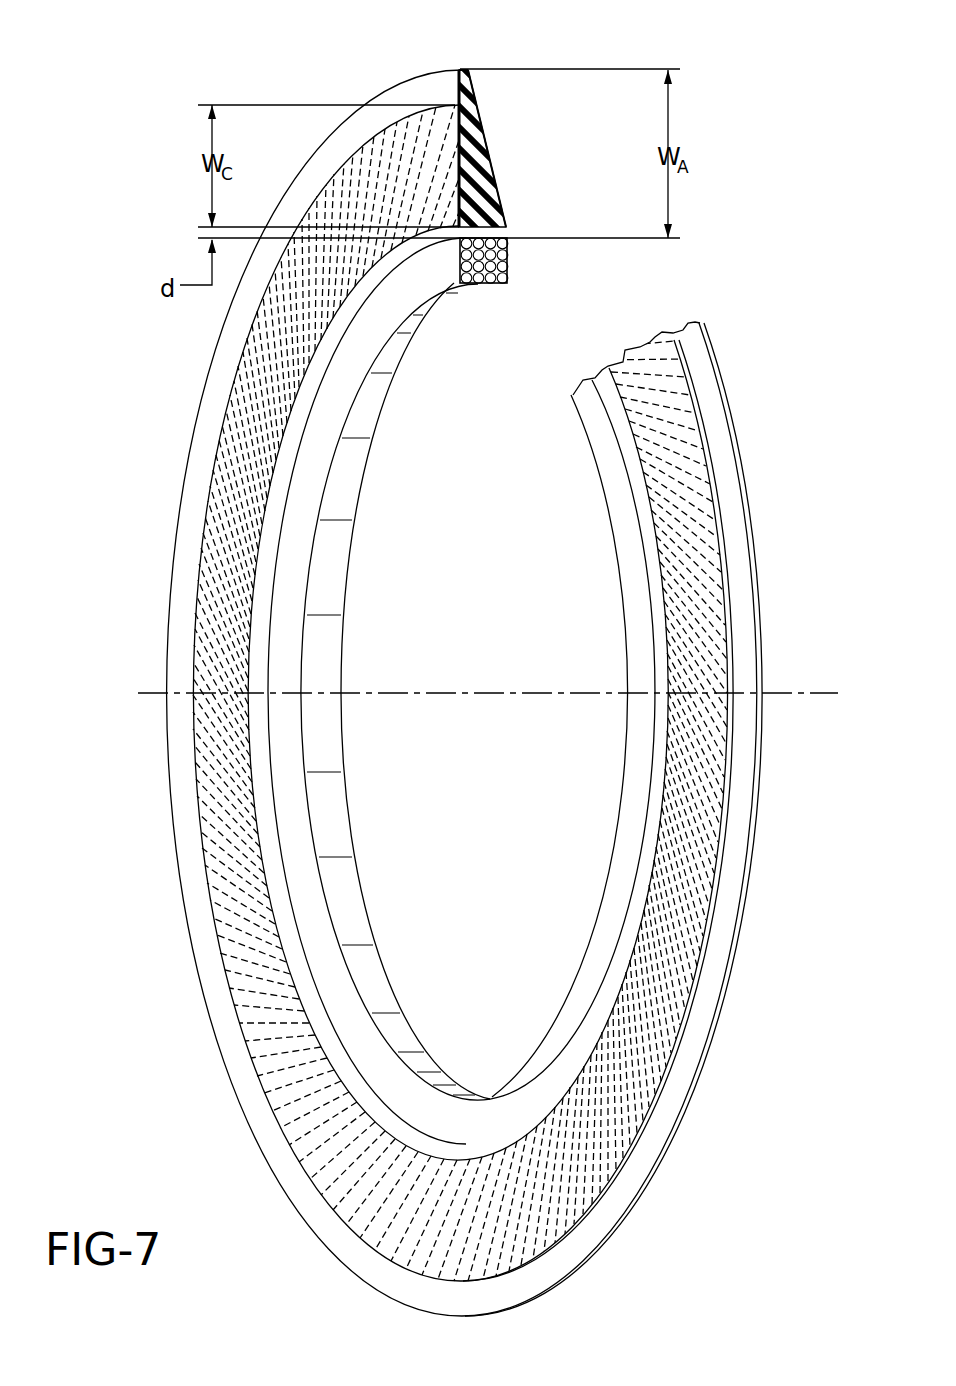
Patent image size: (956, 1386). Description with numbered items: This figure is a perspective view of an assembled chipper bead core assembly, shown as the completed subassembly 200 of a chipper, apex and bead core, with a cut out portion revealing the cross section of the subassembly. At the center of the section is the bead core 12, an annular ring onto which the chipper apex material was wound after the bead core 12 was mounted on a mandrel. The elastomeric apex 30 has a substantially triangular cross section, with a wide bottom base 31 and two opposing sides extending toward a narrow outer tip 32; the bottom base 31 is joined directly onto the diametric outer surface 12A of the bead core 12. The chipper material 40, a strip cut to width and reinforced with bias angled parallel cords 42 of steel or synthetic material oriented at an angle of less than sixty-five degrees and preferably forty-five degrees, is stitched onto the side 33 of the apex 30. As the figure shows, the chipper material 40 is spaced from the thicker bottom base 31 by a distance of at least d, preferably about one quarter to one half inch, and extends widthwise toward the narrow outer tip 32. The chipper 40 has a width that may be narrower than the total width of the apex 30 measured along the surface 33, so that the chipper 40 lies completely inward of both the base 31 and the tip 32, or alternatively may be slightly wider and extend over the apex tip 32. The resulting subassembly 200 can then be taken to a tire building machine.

The bead core 12 is at (489, 281).
The diametric outer surface 12A is at (503, 215).
The apex 30 is at (500, 113).
The bottom base 31 is at (503, 246).
The narrow outer tip 32 is at (462, 70).
The side 33 is at (459, 79).
The chipper material 40 is at (450, 173).
The cords 42 is at (267, 385).
The subassembly 200 is at (770, 386).